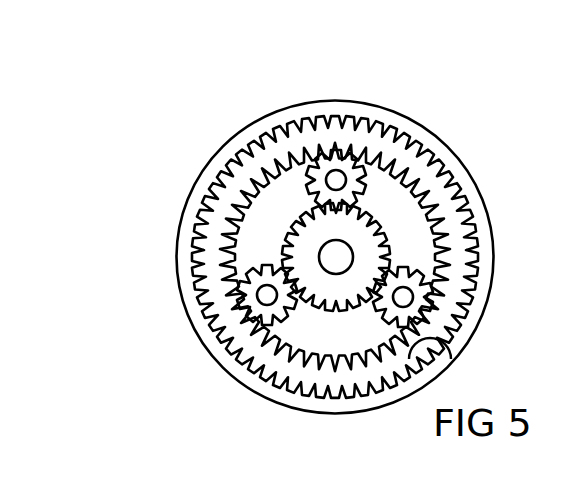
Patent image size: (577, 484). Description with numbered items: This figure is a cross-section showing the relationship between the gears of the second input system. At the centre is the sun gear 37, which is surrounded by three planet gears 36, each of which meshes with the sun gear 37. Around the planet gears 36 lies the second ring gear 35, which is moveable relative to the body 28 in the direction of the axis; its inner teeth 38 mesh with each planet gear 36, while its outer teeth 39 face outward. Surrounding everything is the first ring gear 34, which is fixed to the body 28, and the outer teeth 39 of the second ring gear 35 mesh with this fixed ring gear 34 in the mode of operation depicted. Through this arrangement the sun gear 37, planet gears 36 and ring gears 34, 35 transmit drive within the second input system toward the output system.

The body 28 is at (426, 124).
The first ring gear 34 is at (444, 157).
The second ring gear 35 is at (354, 227).
The planet gear 36 is at (385, 170).
The sun gear 37 is at (387, 237).
The inner teeth 38 is at (266, 180).
The outer teeth 39 is at (437, 341).